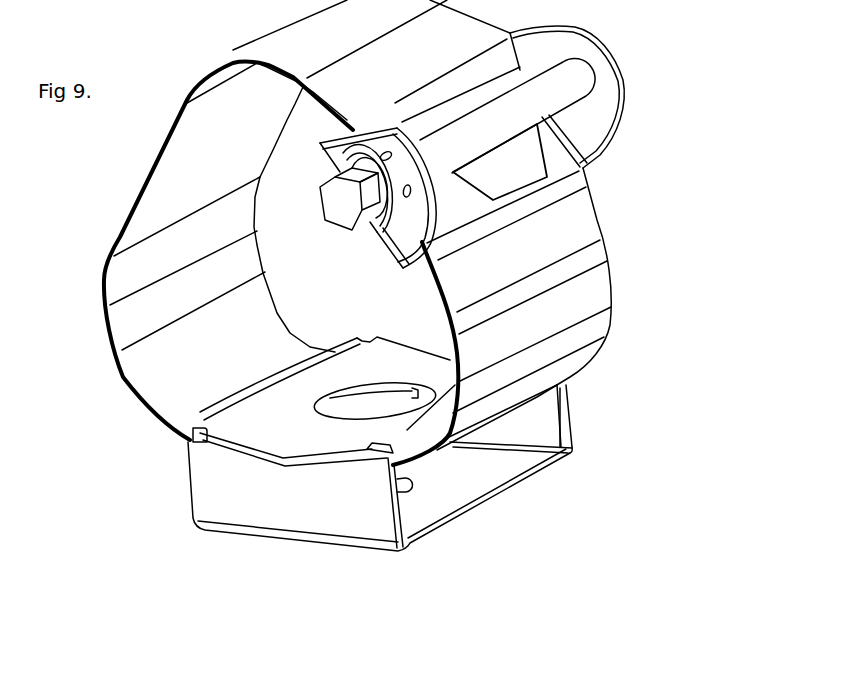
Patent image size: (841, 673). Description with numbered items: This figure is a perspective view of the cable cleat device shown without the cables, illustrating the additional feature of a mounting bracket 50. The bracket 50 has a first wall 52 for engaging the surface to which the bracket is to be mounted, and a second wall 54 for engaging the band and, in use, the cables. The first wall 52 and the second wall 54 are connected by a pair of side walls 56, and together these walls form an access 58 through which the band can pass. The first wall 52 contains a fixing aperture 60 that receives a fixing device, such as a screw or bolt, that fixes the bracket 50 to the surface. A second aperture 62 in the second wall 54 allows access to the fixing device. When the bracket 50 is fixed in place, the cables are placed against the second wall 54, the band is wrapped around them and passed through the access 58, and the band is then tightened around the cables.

The mounting bracket 50 is at (396, 433).
The first wall 52 is at (440, 505).
The second wall 54 is at (190, 438).
The side walls 56 is at (217, 498).
The access 58 is at (616, 456).
The fixing aperture 60 is at (401, 480).
The second aperture 62 is at (347, 407).